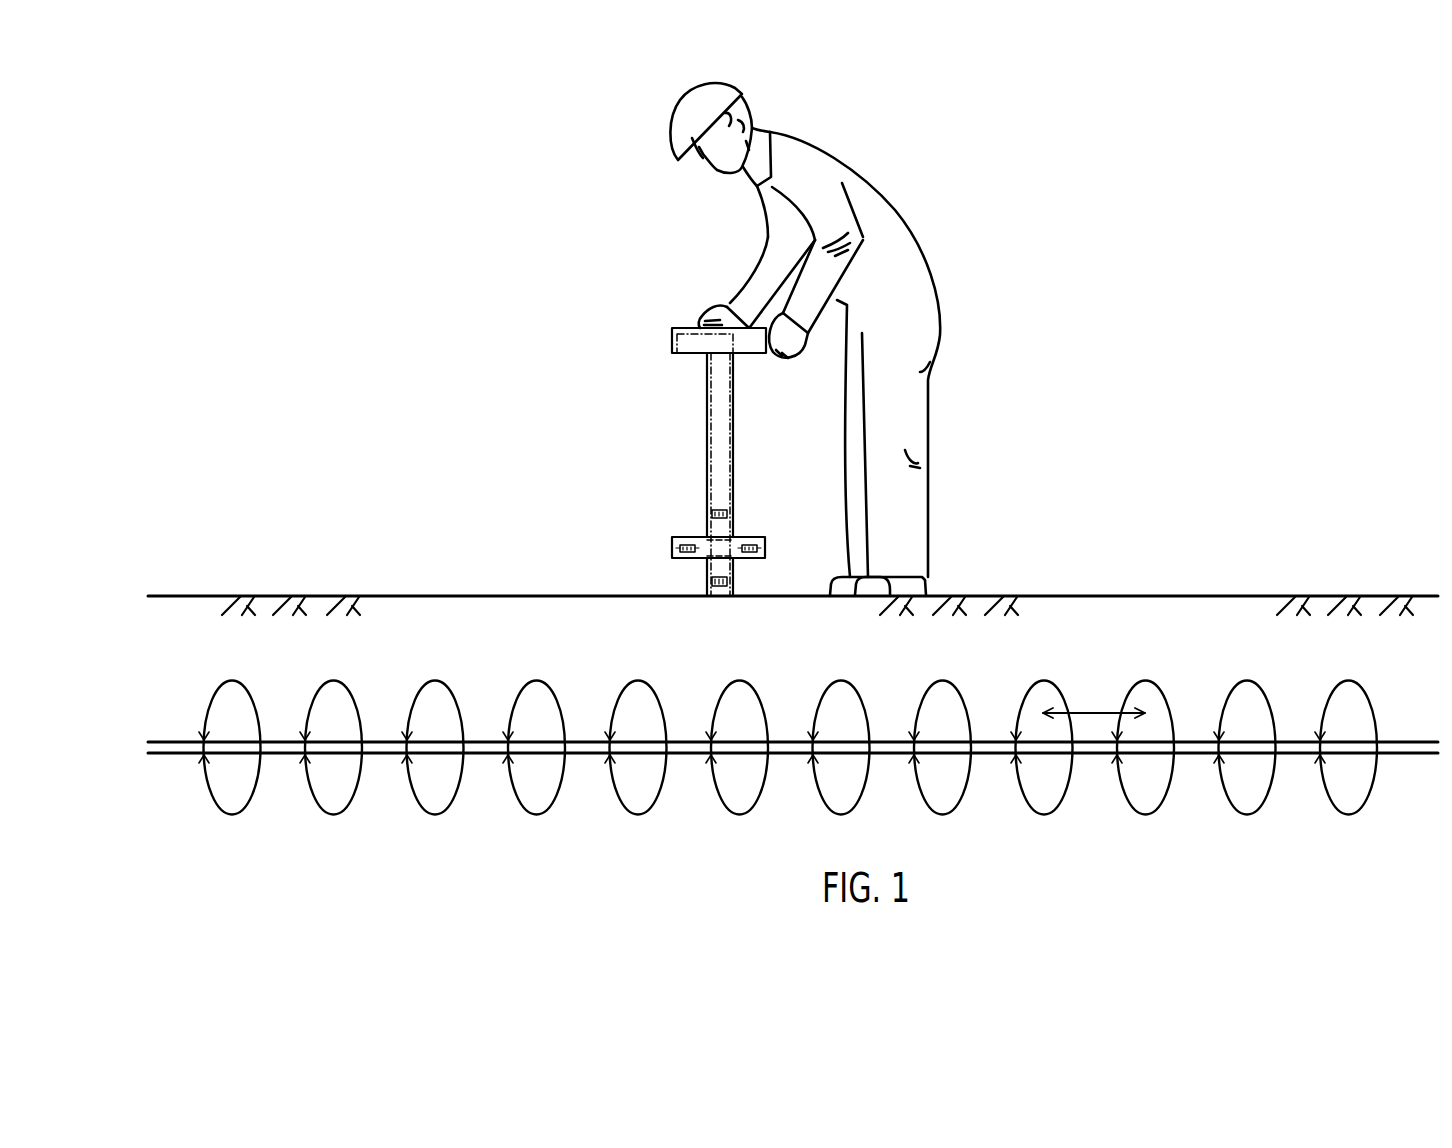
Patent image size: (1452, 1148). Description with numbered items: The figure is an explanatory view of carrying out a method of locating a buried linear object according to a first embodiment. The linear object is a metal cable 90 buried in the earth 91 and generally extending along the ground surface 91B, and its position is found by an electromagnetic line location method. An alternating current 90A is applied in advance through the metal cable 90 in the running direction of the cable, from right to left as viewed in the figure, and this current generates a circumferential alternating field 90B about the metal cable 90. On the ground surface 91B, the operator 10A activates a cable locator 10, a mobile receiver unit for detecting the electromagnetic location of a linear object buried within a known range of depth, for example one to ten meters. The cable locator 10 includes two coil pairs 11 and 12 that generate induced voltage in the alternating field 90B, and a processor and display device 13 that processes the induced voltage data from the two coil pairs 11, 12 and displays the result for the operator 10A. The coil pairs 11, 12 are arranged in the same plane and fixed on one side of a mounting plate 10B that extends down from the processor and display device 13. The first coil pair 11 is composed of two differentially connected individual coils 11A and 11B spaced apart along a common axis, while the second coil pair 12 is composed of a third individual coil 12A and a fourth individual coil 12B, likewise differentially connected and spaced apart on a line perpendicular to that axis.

The cable locator 10 is at (693, 465).
The operator 10A is at (905, 212).
The mounting plate 10B is at (720, 460).
The first coil pair 11 is at (708, 608).
The individual coil 11A is at (687, 553).
The individual coil 11B is at (753, 591).
The second coil pair 12 is at (647, 519).
The third individual coil 12A is at (716, 575).
The fourth individual coil 12B is at (707, 510).
The processor and display device 13 is at (680, 327).
The metal cable 90 is at (1407, 755).
The alternating current 90A is at (1092, 712).
The alternating field 90B is at (340, 803).
The earth 91 is at (1208, 617).
The ground surface 91B is at (1102, 592).